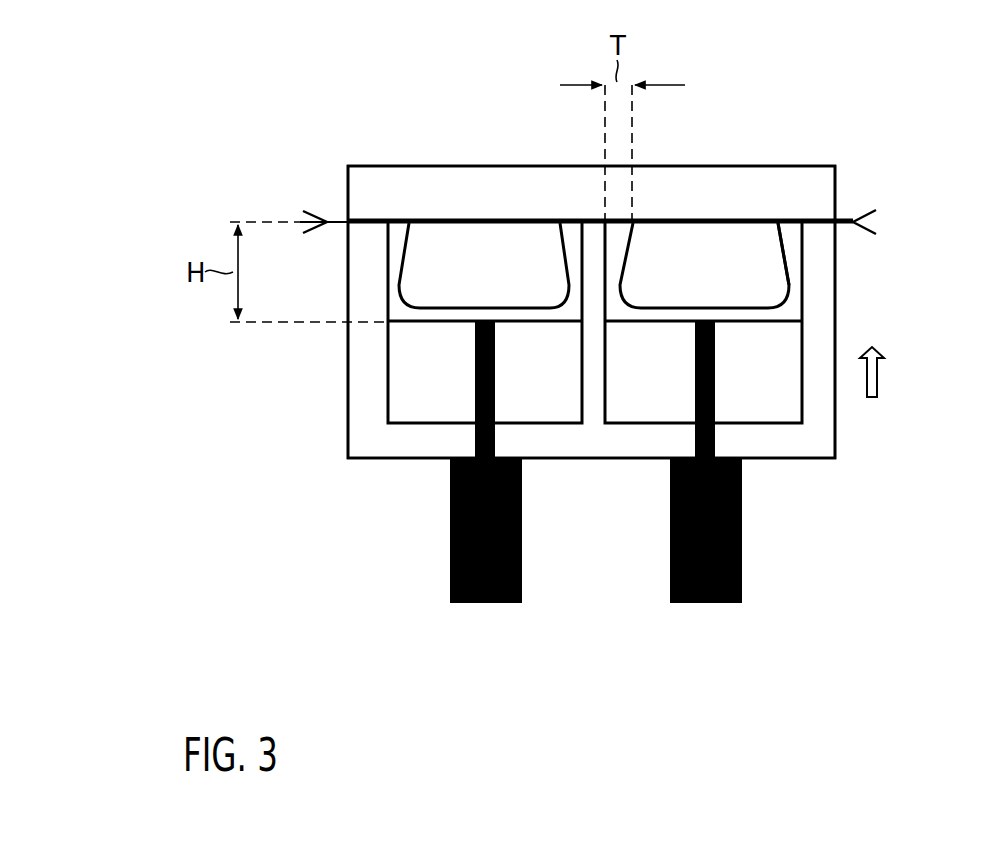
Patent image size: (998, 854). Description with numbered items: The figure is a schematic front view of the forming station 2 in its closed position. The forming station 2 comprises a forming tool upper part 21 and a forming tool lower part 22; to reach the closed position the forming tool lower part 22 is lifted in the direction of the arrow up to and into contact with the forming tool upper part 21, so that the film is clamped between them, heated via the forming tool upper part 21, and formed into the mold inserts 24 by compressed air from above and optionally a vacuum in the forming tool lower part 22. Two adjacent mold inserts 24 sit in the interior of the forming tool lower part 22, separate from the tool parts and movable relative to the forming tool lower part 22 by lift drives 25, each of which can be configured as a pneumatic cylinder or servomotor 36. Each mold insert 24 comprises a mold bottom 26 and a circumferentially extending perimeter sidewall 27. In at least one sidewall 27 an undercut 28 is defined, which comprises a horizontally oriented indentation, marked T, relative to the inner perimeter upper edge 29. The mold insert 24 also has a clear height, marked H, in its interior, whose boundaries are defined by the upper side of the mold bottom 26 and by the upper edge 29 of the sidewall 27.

The forming station 2 is at (932, 155).
The forming tool upper part 21 is at (428, 177).
The forming tool lower part 22 is at (820, 440).
The mold insert 24 is at (790, 309).
The lift drive 25 is at (458, 608).
The mold bottom 26 is at (431, 313).
The sidewall 27 is at (790, 263).
The undercut 28 is at (634, 296).
The upper edge 29 is at (637, 213).
The pneumatic cylinder or servomotor 36 is at (450, 575).